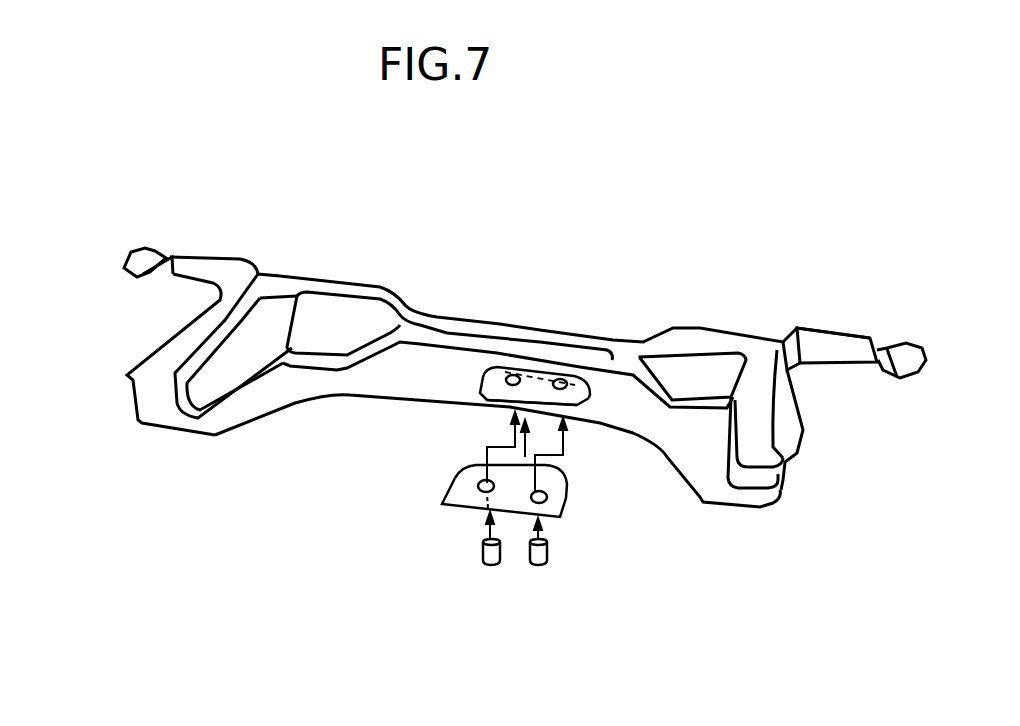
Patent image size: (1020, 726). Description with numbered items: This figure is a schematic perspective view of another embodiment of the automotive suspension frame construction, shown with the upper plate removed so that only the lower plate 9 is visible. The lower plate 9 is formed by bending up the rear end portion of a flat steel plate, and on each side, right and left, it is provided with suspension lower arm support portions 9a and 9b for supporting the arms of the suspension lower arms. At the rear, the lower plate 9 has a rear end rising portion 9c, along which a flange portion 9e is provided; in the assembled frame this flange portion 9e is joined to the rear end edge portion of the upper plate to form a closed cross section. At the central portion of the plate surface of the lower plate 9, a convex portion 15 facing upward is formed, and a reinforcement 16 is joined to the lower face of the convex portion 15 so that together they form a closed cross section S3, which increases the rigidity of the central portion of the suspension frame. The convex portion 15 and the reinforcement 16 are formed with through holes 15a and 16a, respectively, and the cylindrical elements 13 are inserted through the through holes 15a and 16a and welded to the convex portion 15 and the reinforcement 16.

The lower plate 9 is at (434, 316).
The suspension lower arm support portion 9a is at (163, 417).
The suspension lower arm support portion 9b is at (209, 275).
The rear end rising portion 9c is at (608, 350).
The flange portion 9e is at (560, 333).
The cylindrical element 13 is at (537, 568).
The convex portion 15 is at (537, 373).
The through hole 15a is at (533, 401).
The reinforcement 16 is at (565, 500).
The through hole 16a is at (528, 500).
The closed cross section S3 is at (573, 403).